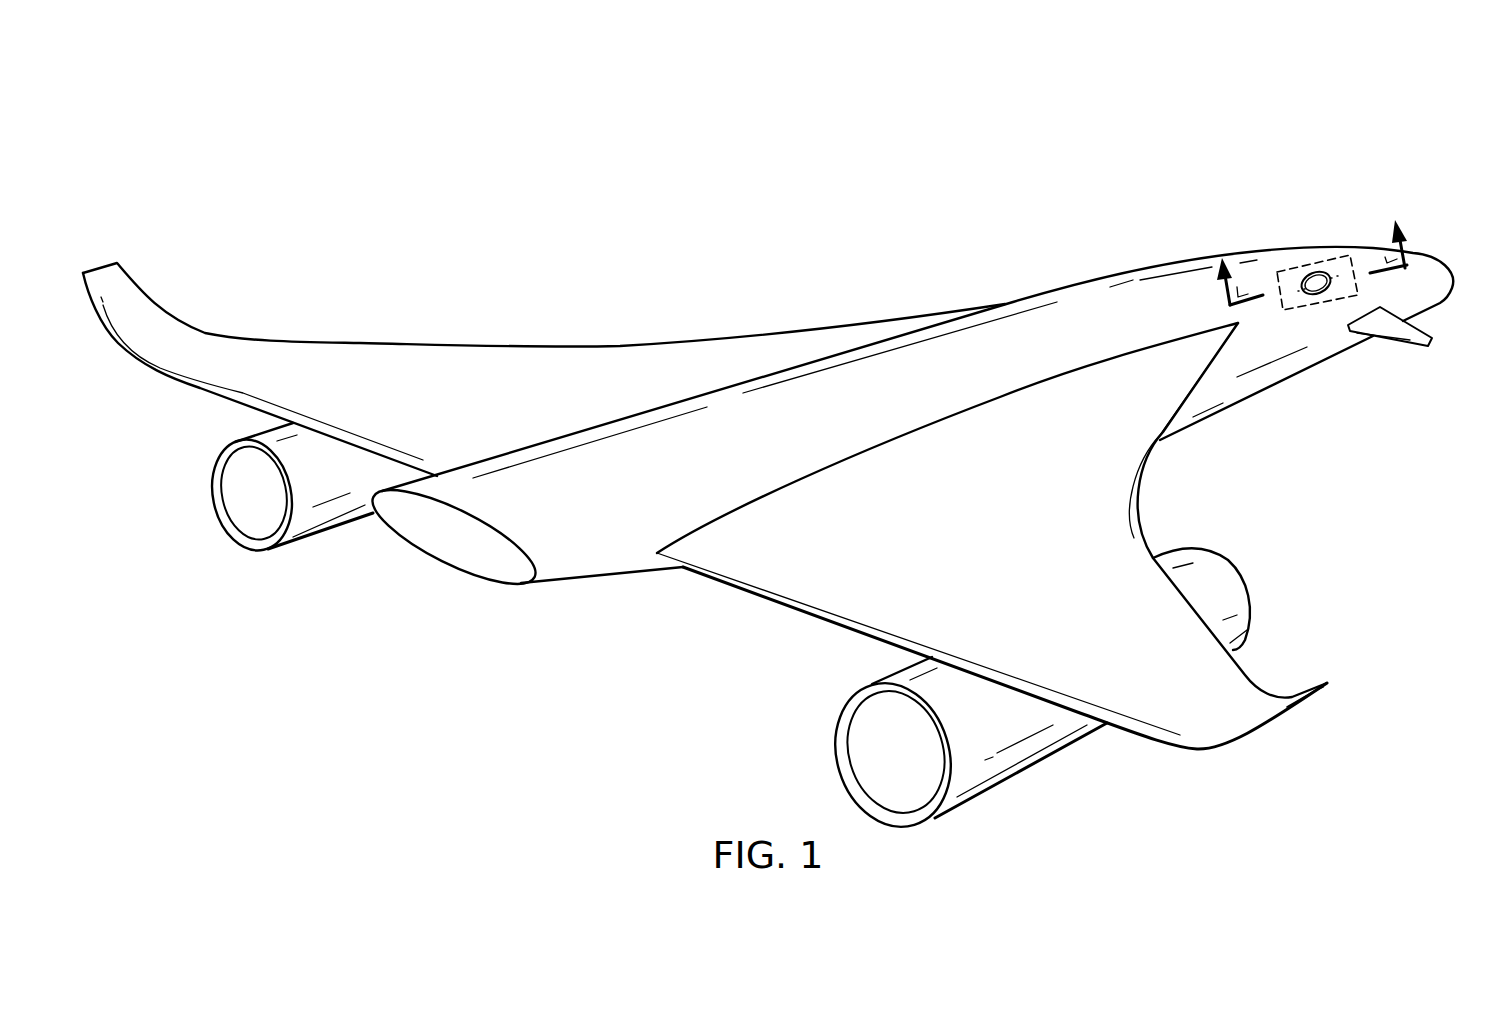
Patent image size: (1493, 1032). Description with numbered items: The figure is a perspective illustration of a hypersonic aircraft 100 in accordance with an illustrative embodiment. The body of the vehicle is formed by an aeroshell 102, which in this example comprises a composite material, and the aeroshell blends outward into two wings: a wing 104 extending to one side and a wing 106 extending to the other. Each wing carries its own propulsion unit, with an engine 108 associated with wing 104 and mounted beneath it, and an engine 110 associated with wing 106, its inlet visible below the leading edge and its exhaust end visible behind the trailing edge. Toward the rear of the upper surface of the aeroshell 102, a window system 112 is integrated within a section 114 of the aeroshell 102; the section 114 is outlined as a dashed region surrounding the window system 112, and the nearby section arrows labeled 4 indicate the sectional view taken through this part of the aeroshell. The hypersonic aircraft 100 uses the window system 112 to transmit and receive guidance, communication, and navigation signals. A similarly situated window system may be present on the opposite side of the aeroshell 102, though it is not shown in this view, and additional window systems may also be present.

The hypersonic aircraft 100 is at (320, 148).
The aeroshell 102 is at (1082, 290).
The wing 104 is at (430, 370).
The wing 106 is at (1105, 490).
The engine 108 is at (305, 540).
The engine 110 is at (1010, 780).
The window system 112 is at (1310, 268).
The section 114 is at (1312, 305).
The section line 4- 4 is at (1309, 248).